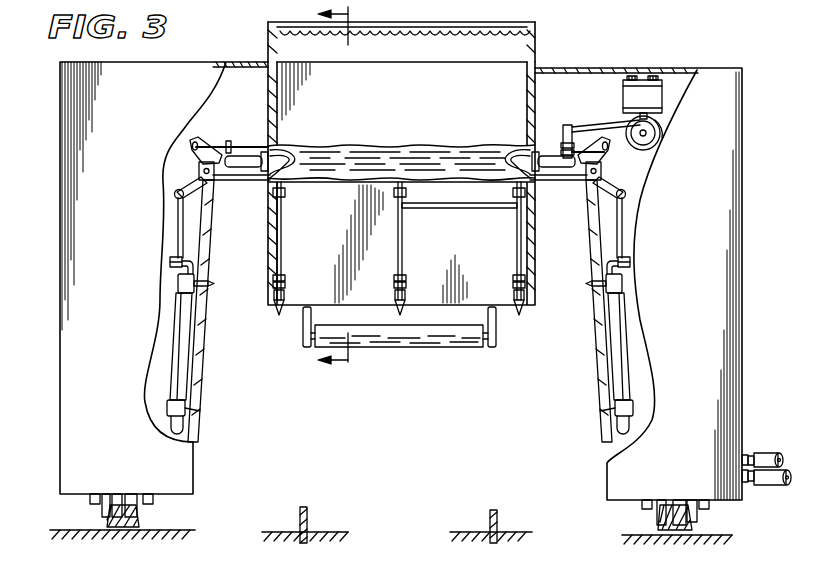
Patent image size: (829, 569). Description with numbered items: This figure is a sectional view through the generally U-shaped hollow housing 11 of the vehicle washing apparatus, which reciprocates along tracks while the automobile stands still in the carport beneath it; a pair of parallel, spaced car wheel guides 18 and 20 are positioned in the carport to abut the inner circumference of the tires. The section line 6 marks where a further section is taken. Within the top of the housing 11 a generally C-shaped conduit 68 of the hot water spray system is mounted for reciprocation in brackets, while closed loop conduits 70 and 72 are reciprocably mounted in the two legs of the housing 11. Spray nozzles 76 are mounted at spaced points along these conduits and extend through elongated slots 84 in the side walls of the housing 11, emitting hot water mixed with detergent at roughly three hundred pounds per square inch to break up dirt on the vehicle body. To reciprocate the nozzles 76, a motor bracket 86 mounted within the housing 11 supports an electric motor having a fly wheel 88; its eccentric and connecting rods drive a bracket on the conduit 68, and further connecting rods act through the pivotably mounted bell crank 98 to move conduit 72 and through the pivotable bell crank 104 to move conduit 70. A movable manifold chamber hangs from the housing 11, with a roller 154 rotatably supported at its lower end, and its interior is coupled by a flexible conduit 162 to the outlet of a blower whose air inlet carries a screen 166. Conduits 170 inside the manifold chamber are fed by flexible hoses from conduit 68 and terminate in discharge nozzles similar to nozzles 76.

The housing 11 is at (60, 160).
The section line 6- 6 is at (320, 187).
The car wheel guide 18 is at (305, 507).
The car wheel guide 20 is at (494, 510).
The C-shaped conduit 68 is at (248, 152).
The closed loop conduit 70 is at (180, 297).
The closed loop conduit 72 is at (620, 302).
The spray nozzle 76 is at (200, 411).
The elongated slot 84 is at (607, 428).
The motor bracket 86 is at (622, 80).
The fly wheel 88 is at (652, 133).
The bell crank 98 is at (628, 190).
The bell crank 104 is at (184, 137).
The roller 154 is at (436, 338).
The flexible conduit 162 is at (441, 146).
The screen 166 is at (468, 26).
The conduits 170 is at (280, 213).